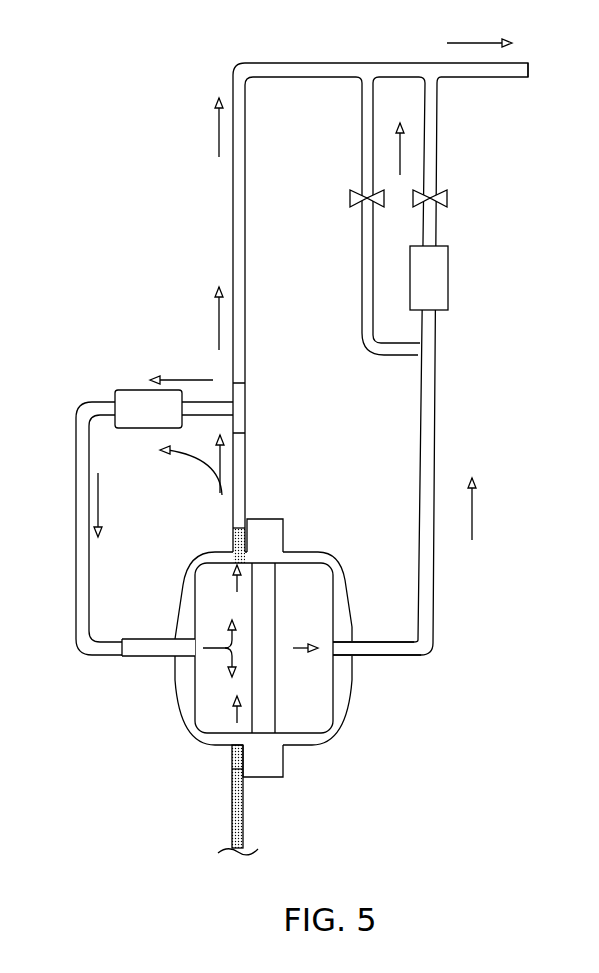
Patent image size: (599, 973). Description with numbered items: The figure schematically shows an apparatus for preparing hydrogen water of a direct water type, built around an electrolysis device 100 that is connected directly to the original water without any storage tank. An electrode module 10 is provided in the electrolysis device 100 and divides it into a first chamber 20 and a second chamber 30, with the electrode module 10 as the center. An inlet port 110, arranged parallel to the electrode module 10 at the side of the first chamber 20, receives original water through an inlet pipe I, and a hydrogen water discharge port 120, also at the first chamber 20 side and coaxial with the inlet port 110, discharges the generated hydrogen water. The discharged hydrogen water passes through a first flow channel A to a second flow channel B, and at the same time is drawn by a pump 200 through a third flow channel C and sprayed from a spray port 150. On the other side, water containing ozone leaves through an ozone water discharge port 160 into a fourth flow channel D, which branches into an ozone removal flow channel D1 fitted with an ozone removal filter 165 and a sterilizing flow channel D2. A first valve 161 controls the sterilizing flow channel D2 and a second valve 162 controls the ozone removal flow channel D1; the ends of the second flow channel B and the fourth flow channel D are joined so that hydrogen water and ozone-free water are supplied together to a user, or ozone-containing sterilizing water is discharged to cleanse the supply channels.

The electrode module 10 is at (285, 714).
The first chamber 20 is at (213, 694).
The second chamber 30 is at (306, 594).
The electrolysis device 100 is at (345, 722).
The inlet port 110 is at (232, 769).
The hydrogen water discharge port 120 is at (233, 538).
The spray port 150 is at (150, 656).
The ozone water discharge port 160 is at (390, 657).
The first valve 161 is at (350, 198).
The second valve 162 is at (416, 200).
The ozone removal filter 165 is at (448, 310).
The pump 200 is at (122, 390).
The first flow channel A is at (245, 478).
The second flow channel B is at (318, 63).
The third flow channel C is at (76, 542).
The fourth flow channel D is at (434, 568).
The ozone removal flow channel D1 is at (425, 120).
The sterilizing flow channel D2 is at (362, 122).
The inlet pipe I is at (243, 830).